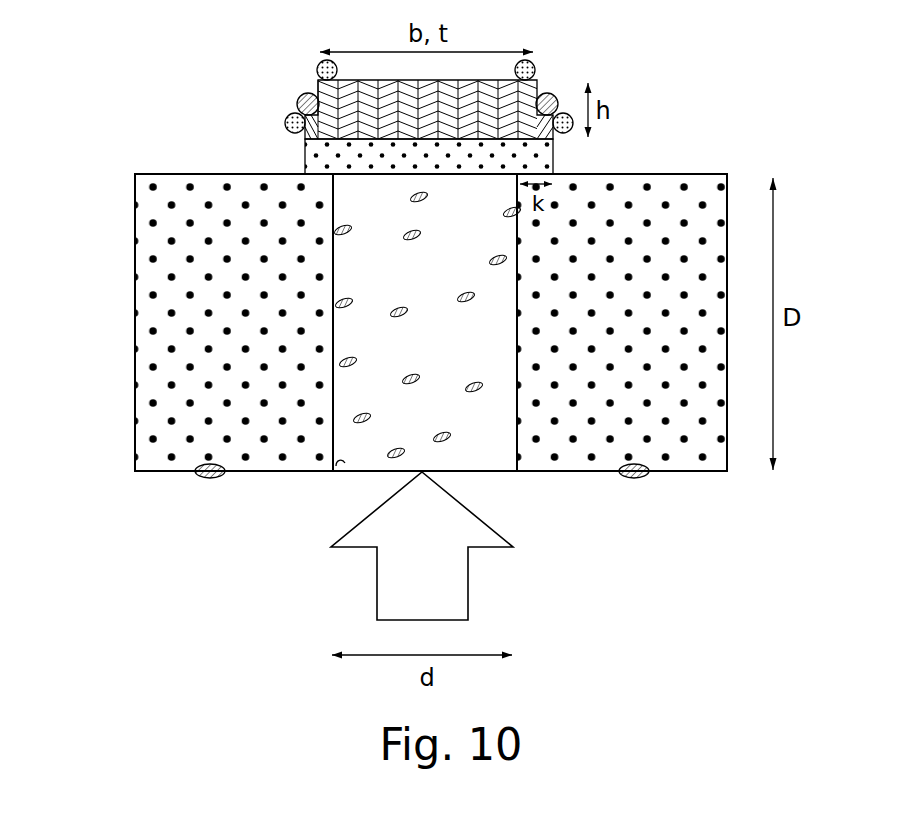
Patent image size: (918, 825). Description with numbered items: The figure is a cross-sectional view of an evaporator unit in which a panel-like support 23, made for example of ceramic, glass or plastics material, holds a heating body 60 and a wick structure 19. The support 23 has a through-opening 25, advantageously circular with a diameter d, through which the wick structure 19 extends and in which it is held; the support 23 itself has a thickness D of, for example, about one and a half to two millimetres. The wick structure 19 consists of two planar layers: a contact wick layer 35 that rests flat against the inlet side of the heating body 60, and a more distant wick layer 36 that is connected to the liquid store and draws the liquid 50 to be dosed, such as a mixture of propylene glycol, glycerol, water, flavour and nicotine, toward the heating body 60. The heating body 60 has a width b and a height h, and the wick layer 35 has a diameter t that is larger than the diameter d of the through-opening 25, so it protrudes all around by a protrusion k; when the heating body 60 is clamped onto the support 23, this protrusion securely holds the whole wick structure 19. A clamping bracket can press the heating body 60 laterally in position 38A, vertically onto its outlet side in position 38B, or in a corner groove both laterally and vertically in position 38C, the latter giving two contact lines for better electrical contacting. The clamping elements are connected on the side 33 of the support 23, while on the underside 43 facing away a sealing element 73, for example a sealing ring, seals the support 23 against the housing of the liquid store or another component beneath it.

The wick structure 19 is at (499, 481).
The support 23 is at (160, 313).
The through-opening 25 is at (340, 464).
The side of the support 33 is at (200, 173).
The wick layer 35 is at (543, 157).
The wick layer 36 is at (403, 350).
The clamping bracket position 38A is at (286, 117).
The clamping bracket position 38B is at (533, 58).
The clamping bracket position 38C is at (304, 95).
The underside of the support 43 is at (707, 473).
The liquid 50 is at (407, 596).
The heating body 60 is at (510, 102).
The sealing element 73 is at (210, 479).